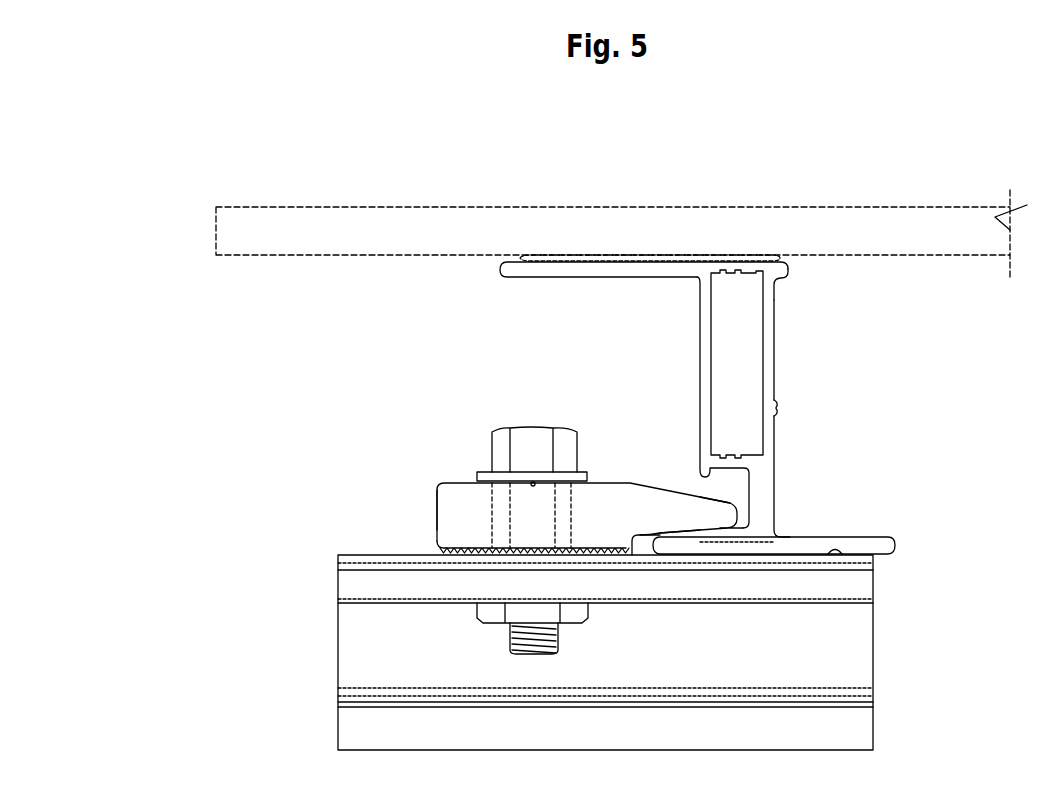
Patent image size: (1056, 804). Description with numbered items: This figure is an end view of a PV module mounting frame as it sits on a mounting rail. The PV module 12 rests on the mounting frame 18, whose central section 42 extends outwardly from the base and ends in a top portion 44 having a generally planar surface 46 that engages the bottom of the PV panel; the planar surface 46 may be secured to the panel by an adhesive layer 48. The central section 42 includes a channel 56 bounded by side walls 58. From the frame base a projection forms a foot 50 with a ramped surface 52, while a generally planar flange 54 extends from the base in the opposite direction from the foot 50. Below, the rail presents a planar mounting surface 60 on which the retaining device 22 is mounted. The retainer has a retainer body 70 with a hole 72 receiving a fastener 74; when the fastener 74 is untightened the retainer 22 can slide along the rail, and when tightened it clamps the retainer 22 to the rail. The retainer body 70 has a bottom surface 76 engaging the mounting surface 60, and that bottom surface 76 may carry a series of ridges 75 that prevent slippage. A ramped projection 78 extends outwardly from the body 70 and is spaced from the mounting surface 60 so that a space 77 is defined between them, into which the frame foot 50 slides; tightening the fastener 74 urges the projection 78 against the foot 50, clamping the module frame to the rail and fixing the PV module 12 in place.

The PV module 12 is at (403, 207).
The mounting frame 18 is at (790, 379).
The retaining device 22 is at (468, 512).
The central section 42 is at (703, 387).
The top portion 44 is at (790, 267).
The planar surface 46 is at (665, 262).
The adhesive layer 48 is at (588, 248).
The foot 50 is at (672, 520).
The ramped surface 52 is at (708, 542).
The planar flange 54 is at (873, 549).
The channel 56 is at (758, 358).
The side walls 58 is at (768, 432).
The mounting surface 60 is at (356, 556).
The retainer body 70 is at (618, 505).
The hole 72 is at (490, 498).
The fastener 74 is at (505, 428).
The ridges 75 is at (440, 553).
The bottom surface 76 is at (453, 555).
The space 77 is at (641, 547).
The ramped projection 78 is at (707, 517).